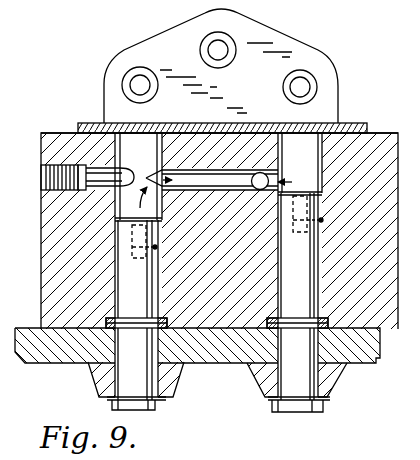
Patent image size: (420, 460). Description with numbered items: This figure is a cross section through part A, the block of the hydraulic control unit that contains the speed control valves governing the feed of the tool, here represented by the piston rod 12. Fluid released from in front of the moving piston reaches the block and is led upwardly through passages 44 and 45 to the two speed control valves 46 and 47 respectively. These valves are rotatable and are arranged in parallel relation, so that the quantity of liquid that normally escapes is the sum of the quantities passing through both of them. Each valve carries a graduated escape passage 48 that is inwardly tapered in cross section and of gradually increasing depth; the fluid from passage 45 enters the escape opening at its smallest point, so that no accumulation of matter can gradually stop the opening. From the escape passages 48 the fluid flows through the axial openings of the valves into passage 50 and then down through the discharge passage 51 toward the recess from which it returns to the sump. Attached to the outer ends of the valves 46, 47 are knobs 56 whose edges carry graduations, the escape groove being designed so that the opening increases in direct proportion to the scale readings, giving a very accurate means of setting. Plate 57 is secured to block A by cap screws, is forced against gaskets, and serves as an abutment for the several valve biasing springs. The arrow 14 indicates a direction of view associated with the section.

The part A is at (44, 248).
The piston rod 12 is at (270, 220).
The direction arrow 14 is at (297, 418).
The passage 44 is at (132, 247).
The passage 45 is at (292, 218).
The speed control valve 46 is at (127, 373).
The speed control valve 47 is at (307, 383).
The graduated escape passage 48 is at (155, 247).
The passage 50 is at (183, 182).
The discharge passage 51 is at (261, 172).
The knob 56 is at (170, 375).
The plate 57 is at (34, 356).